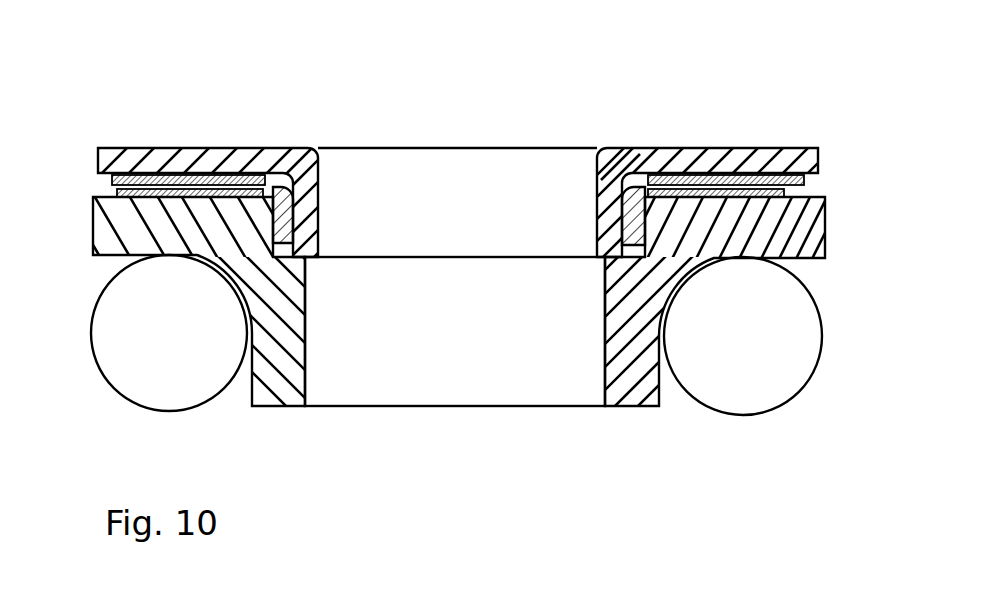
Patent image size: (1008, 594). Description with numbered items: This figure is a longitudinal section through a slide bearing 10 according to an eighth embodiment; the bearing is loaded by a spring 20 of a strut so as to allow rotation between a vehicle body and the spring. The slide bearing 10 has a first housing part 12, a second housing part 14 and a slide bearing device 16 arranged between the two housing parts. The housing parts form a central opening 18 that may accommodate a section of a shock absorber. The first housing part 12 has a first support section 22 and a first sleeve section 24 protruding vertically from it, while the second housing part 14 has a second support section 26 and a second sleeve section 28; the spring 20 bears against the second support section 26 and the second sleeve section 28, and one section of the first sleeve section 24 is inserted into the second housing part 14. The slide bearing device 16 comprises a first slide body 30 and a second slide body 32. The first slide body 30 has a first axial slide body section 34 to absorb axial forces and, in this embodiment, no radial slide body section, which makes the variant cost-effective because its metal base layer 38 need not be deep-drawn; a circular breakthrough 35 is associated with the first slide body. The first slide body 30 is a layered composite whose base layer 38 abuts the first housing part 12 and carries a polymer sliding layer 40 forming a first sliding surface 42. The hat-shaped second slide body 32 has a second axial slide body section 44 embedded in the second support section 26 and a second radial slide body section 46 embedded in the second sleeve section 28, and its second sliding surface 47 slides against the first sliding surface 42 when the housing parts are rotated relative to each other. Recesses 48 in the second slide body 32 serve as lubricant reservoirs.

The slide bearing 10 is at (643, 120).
The first housing part 12 is at (802, 186).
The second housing part 14 is at (810, 240).
The slide bearing device 16 is at (97, 181).
The central opening 18 is at (580, 385).
The spring 20 is at (766, 388).
The first support section 22 is at (104, 148).
The first sleeve section 24 is at (312, 232).
The second support section 26 is at (88, 258).
The second sleeve section 28 is at (305, 364).
The first slide body 30 is at (195, 188).
The second slide body 32 is at (281, 172).
The first axial slide body section 34 is at (668, 176).
The circular breakthrough 35 is at (648, 178).
The base layer 38 is at (237, 188).
The sliding layer 40 is at (153, 178).
The first sliding surface 42 is at (773, 178).
The second axial slide body section 44 is at (792, 197).
The second radial slide body section 46 is at (622, 208).
The second sliding surface 47 is at (765, 197).
The recesses 48 is at (729, 178).